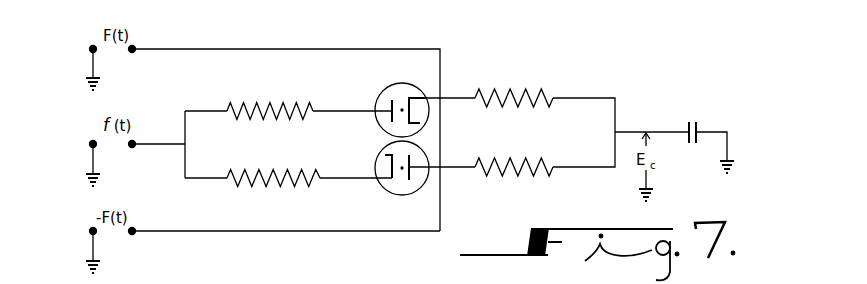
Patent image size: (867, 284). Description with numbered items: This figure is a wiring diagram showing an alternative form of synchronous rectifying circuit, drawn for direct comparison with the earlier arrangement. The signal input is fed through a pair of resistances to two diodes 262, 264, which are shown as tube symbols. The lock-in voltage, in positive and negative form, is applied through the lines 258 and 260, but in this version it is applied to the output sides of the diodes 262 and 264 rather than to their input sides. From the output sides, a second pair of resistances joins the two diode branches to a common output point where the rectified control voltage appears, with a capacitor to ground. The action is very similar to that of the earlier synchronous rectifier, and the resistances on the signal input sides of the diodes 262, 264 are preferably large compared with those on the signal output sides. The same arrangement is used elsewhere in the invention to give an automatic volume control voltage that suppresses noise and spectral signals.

The line 258 is at (286, 49).
The line 260 is at (284, 231).
The diode 262 is at (384, 92).
The diode 264 is at (383, 187).